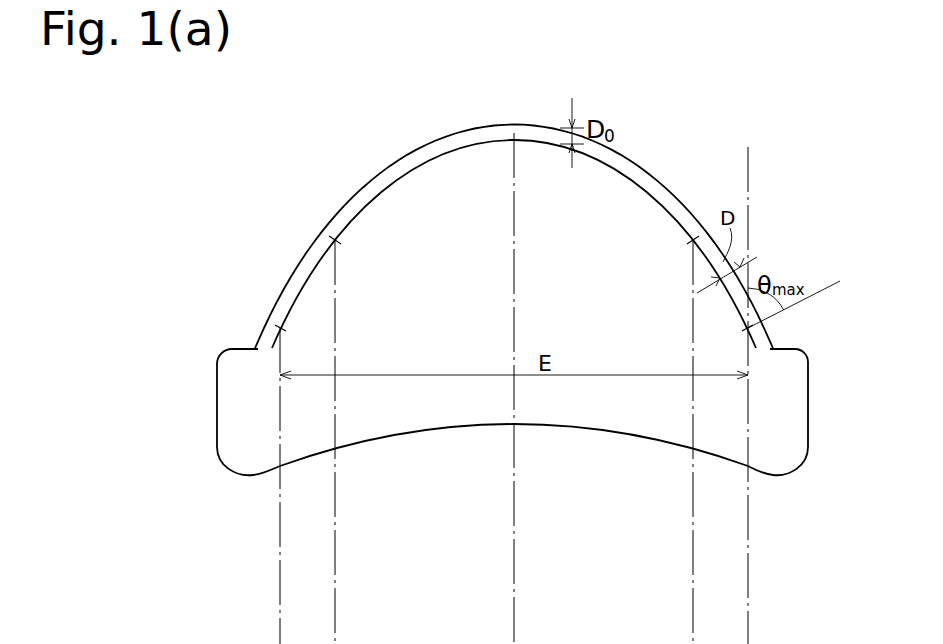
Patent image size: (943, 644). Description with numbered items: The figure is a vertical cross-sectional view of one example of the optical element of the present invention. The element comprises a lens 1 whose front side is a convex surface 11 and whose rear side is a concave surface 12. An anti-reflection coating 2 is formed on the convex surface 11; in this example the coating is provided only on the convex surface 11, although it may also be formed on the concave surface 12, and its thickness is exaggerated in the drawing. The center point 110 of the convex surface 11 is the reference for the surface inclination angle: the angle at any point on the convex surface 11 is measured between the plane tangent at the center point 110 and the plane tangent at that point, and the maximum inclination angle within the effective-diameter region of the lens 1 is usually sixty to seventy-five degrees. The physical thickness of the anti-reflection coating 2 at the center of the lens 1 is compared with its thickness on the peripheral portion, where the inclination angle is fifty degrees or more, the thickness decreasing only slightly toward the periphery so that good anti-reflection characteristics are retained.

The lens 1 is at (514, 205).
The anti-reflection coating 2 is at (462, 143).
The convex surface 11 is at (412, 170).
The center point 110 is at (513, 142).
The concave surface 12 is at (447, 429).